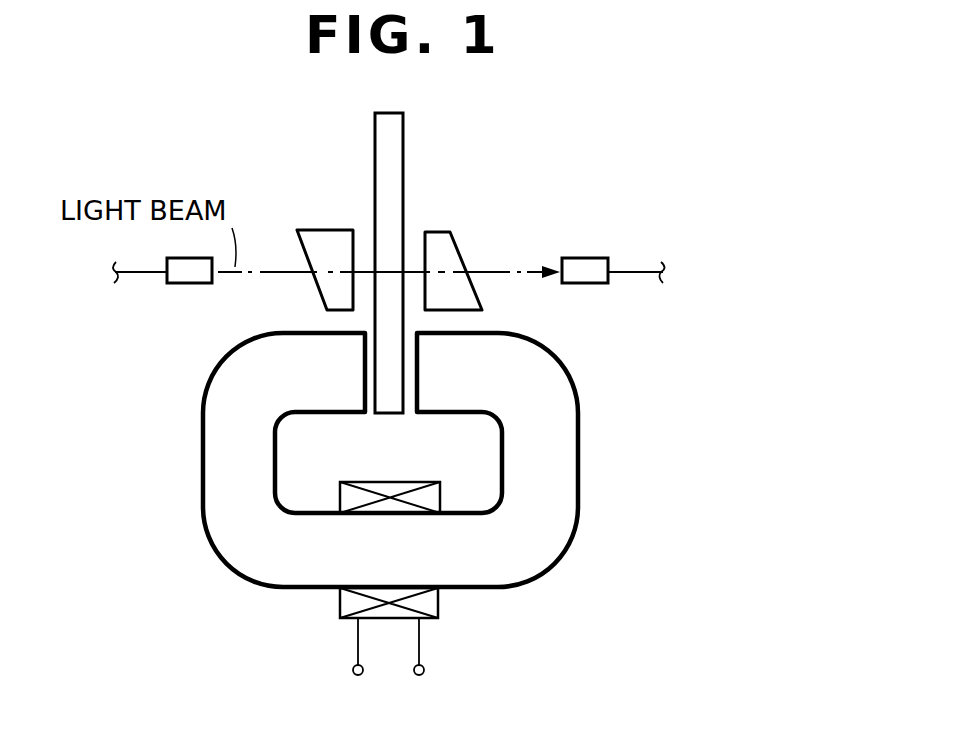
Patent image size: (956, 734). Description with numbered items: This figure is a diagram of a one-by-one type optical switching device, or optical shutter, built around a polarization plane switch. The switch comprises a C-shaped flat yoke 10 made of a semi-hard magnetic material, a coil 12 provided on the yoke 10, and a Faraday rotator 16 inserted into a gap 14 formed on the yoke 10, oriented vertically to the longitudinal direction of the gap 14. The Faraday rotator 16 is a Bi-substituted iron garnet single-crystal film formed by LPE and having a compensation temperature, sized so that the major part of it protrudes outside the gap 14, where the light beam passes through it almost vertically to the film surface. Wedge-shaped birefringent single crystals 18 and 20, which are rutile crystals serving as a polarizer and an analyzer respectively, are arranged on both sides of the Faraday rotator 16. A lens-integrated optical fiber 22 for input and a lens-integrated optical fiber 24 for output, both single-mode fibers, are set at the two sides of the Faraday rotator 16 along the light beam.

The yoke 10 is at (572, 503).
The coil 12 is at (430, 600).
The gap 14 is at (408, 367).
The Faraday rotator 16 is at (404, 147).
The birefringent single crystal 18 is at (318, 238).
The birefringent single crystal 20 is at (442, 237).
The lens-integrated optical fiber for input 22 is at (183, 275).
The lens-integrated optical fiber for output 24 is at (587, 267).